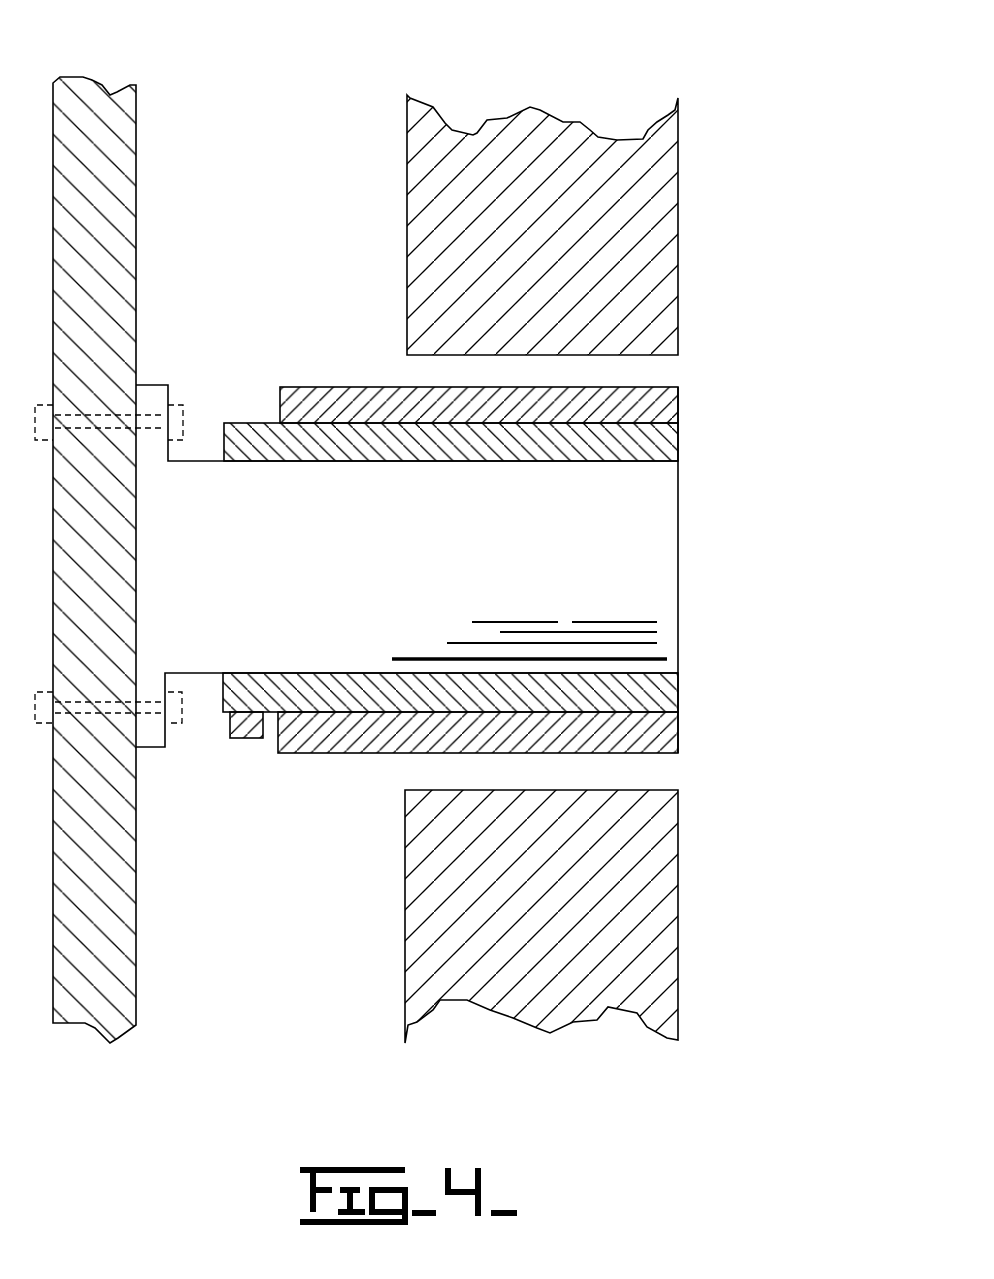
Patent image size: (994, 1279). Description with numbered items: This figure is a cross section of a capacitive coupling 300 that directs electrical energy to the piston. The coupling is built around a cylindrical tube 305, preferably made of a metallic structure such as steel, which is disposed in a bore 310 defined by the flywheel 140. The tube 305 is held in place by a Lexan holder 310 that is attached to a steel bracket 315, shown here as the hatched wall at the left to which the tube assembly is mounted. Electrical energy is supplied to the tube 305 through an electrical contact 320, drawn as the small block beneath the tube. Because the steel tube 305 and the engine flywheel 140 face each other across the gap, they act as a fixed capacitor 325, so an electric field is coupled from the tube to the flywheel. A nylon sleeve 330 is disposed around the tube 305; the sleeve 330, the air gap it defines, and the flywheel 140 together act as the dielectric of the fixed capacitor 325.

The steel bracket 315 is at (117, 92).
The capacitive coupling 300 is at (275, 929).
The cylindrical tube 305 is at (678, 695).
The bore 310 is at (678, 610).
The fixed capacitor 325 is at (722, 349).
The nylon sleeve 330 is at (678, 733).
The electrical contact 320 is at (250, 740).
The flywheel 140 is at (677, 857).